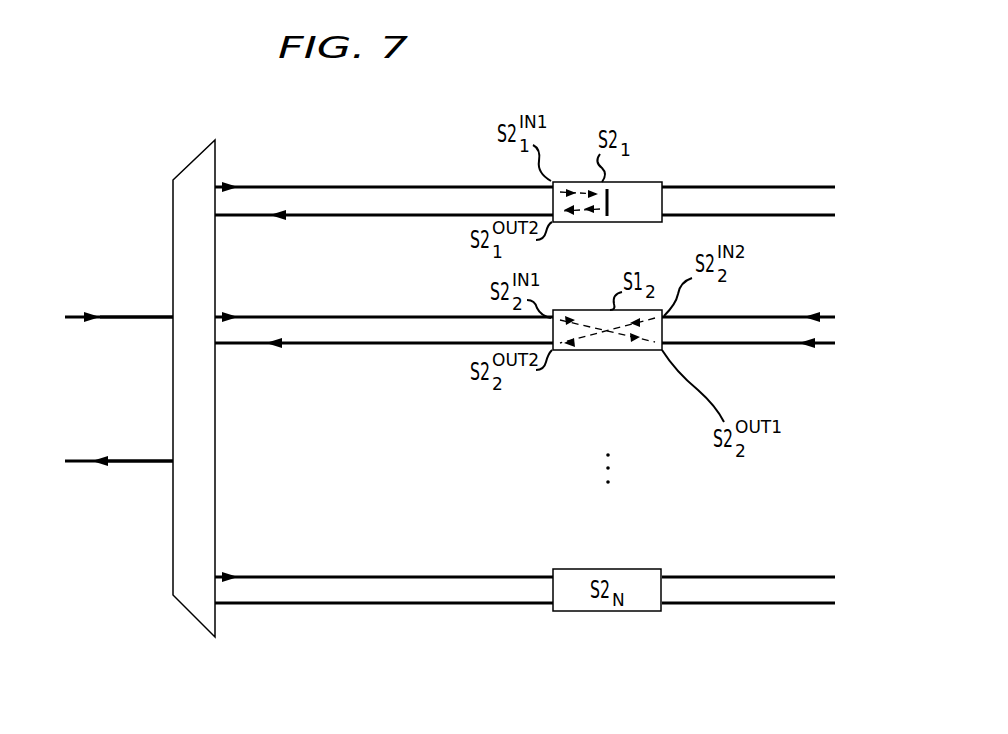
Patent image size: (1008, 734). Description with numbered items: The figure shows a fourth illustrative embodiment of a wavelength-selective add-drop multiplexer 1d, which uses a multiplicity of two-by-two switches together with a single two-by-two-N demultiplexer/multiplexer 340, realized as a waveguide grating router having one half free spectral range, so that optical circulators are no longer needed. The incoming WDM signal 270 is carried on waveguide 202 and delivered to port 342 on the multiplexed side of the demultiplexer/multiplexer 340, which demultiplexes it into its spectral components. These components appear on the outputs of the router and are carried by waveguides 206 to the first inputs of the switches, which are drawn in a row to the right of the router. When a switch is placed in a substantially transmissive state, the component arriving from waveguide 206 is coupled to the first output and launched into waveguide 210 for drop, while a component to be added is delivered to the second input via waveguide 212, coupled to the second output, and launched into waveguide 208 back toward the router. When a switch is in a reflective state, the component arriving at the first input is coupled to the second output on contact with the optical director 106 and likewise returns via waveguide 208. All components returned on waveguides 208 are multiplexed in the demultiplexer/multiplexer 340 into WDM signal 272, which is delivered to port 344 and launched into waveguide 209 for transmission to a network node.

The wavelength-selective add-drop multiplexer 1d is at (464, 88).
The optical director 106 is at (613, 200).
The waveguide 202 is at (148, 319).
The waveguides 206 is at (367, 575).
The waveguides 208 is at (347, 632).
The waveguide 209 is at (150, 464).
The waveguides 210 is at (738, 636).
The waveguides 212 is at (701, 184).
The WDM signal 270 is at (93, 316).
The WDM signal 272 is at (93, 460).
The demultiplexer/multiplexer 340 is at (211, 400).
The port 342 is at (172, 316).
The port 344 is at (167, 460).